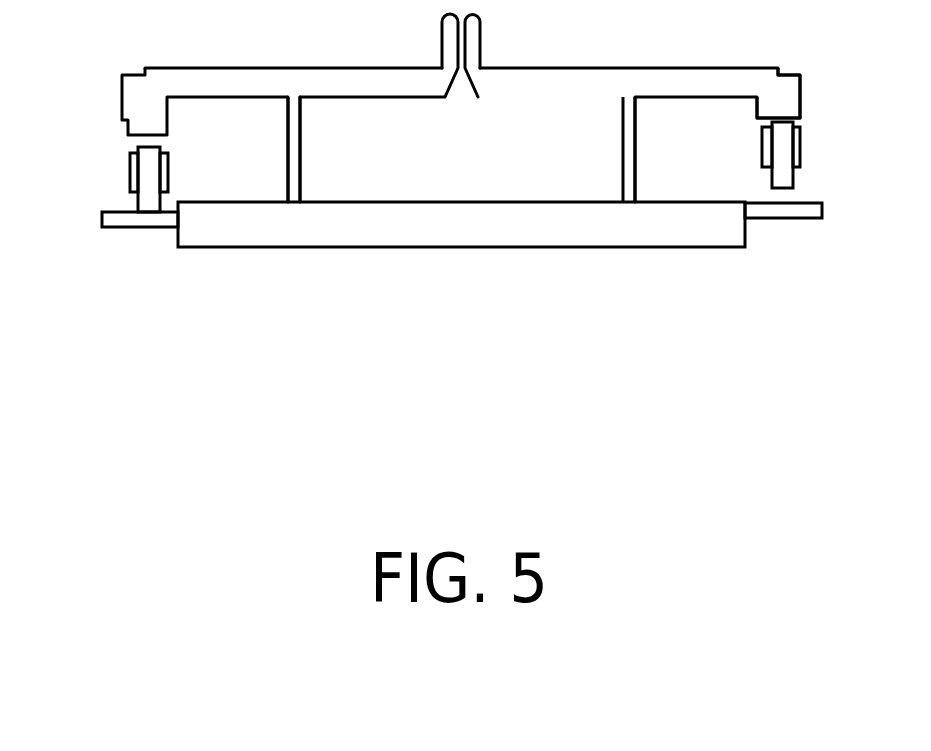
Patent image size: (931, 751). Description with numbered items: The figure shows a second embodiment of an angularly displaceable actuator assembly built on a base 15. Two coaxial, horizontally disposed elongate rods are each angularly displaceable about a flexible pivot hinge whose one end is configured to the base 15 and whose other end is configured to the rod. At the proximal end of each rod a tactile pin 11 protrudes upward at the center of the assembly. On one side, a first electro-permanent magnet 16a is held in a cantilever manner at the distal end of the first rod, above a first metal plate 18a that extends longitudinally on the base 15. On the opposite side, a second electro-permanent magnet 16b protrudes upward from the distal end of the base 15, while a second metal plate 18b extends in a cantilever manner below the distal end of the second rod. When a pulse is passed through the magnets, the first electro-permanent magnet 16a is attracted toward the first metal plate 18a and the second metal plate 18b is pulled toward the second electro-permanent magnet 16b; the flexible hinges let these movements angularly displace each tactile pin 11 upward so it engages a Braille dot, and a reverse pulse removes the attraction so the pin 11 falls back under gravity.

The tactile pin 11 is at (447, 42).
The base 15 is at (453, 230).
The first electro-permanent magnet 16a is at (783, 130).
The second electro-permanent magnet 16b is at (148, 200).
The first metal plate 18a is at (768, 207).
The second metal plate 18b is at (147, 127).